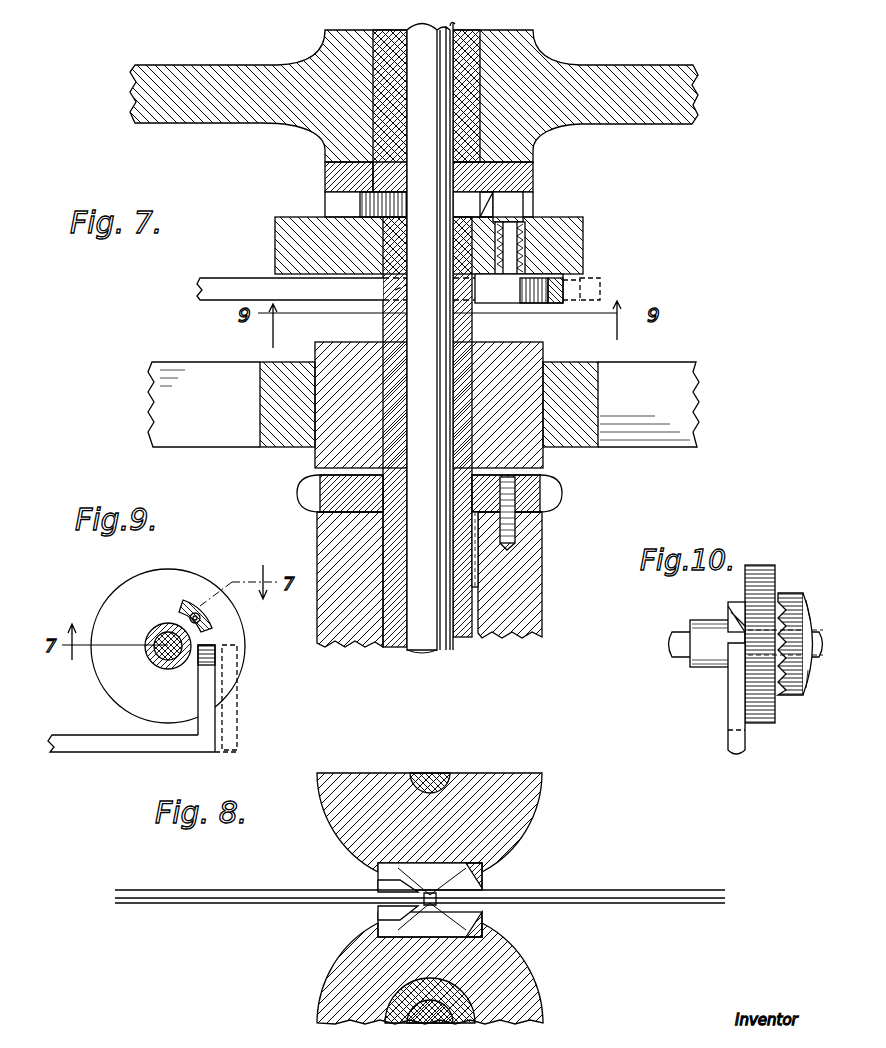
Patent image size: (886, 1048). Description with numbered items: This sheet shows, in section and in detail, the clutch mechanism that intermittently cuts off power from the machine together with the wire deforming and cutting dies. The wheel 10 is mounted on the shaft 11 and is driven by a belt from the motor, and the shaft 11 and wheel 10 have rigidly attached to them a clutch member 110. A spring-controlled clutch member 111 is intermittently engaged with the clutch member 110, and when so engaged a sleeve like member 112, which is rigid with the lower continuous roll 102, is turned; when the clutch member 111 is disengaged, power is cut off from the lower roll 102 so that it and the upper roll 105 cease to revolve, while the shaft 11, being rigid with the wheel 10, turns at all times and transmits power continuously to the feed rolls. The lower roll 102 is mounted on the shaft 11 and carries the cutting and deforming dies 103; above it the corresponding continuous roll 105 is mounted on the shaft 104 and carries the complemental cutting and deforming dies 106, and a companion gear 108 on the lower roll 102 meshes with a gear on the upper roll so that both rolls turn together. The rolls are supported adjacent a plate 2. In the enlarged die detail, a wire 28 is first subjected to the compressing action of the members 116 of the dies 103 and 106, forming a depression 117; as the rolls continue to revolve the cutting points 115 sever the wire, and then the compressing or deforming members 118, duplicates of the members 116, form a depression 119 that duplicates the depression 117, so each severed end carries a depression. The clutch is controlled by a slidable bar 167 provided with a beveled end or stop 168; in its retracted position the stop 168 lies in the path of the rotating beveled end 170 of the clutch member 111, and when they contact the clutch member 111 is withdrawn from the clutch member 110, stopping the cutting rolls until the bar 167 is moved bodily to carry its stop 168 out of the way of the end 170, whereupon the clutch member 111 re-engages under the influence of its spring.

In FIG. 7, the plate 2 is at (205, 435).
In FIG. 7, the wheel 10 is at (563, 73).
In FIG. 7, the shaft 11 is at (418, 42).
In FIG. 9, the shaft 11 is at (158, 658).
In FIG. 10, the shaft 11 is at (680, 650).
In FIG. 8, the shaft 11 is at (432, 1012).
In FIG. 8, the wire 28 is at (180, 900).
In FIG. 7, the continuous roll 102 is at (335, 546).
In FIG. 8, the continuous roll 102 is at (505, 990).
In FIG. 8, the cutting and deforming dies 103 is at (378, 926).
In FIG. 8, the shaft 104 is at (432, 775).
In FIG. 8, the continuous roll 105 is at (535, 797).
In FIG. 8, the complemental cutting and deforming dies 106 is at (348, 866).
In FIG. 7, the companion gear 108 is at (550, 493).
In FIG. 7, the clutch member 110 is at (530, 179).
In FIG. 10, the clutch member 110 is at (794, 686).
In FIG. 7, the clutch member 111 is at (515, 207).
In FIG. 9, the clutch member 111 is at (188, 600).
In FIG. 10, the clutch member 111 is at (786, 632).
In FIG. 7, the sleeve like member 112 is at (560, 245).
In FIG. 9, the sleeve like member 112 is at (141, 584).
In FIG. 10, the sleeve like member 112 is at (716, 668).
In FIG. 8, the sleeve like member 112 is at (410, 990).
In FIG. 8, the cutting points 115 is at (482, 866).
In FIG. 8, the compressing members 116 is at (465, 880).
In FIG. 8, the depression 117 is at (470, 892).
In FIG. 8, the compressing or deforming members 118 is at (380, 890).
In FIG. 8, the depression 119 is at (412, 910).
In FIG. 7, the slidable bar 167 is at (235, 286).
In FIG. 9, the slidable bar 167 is at (93, 742).
In FIG. 10, the slidable bar 167 is at (733, 752).
In FIG. 7, the beveled end 168 is at (565, 288).
In FIG. 9, the beveled end 168 is at (230, 645).
In FIG. 10, the beveled end 168 is at (731, 648).
In FIG. 7, the beveled end 170 is at (545, 305).
In FIG. 9, the beveled end 170 is at (214, 641).
In FIG. 10, the beveled end 170 is at (735, 612).